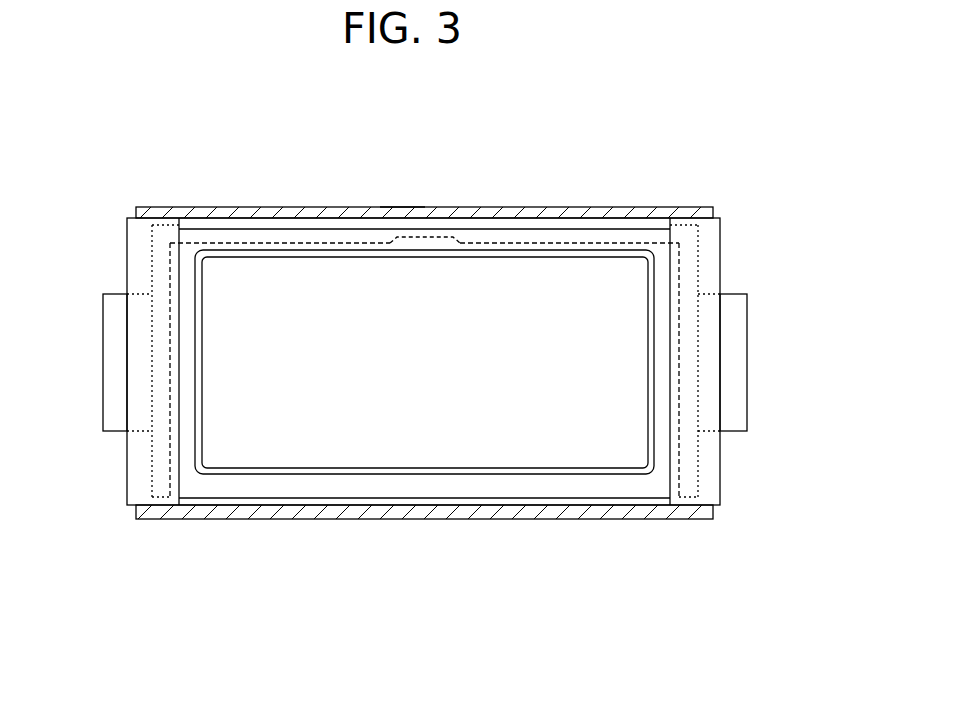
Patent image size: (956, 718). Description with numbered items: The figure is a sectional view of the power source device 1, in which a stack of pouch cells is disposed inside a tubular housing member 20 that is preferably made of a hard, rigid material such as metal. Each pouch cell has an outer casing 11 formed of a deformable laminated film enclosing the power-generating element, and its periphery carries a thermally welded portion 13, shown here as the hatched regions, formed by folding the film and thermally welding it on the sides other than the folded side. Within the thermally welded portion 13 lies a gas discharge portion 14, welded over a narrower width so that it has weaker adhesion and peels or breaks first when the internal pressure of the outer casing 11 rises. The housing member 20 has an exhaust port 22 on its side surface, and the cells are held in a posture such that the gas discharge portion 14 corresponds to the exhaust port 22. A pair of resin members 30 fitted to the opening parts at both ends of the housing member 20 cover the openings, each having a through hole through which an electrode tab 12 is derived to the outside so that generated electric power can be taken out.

The power source device 1 is at (763, 563).
The outer casing 11 is at (492, 492).
The electrode tab 12 is at (112, 357).
The thermally welded portion 13 is at (593, 235).
The gas discharge portion 14 is at (437, 232).
The housing member 20 is at (283, 207).
The exhaust port 22 is at (402, 200).
The resin member 30 is at (137, 240).